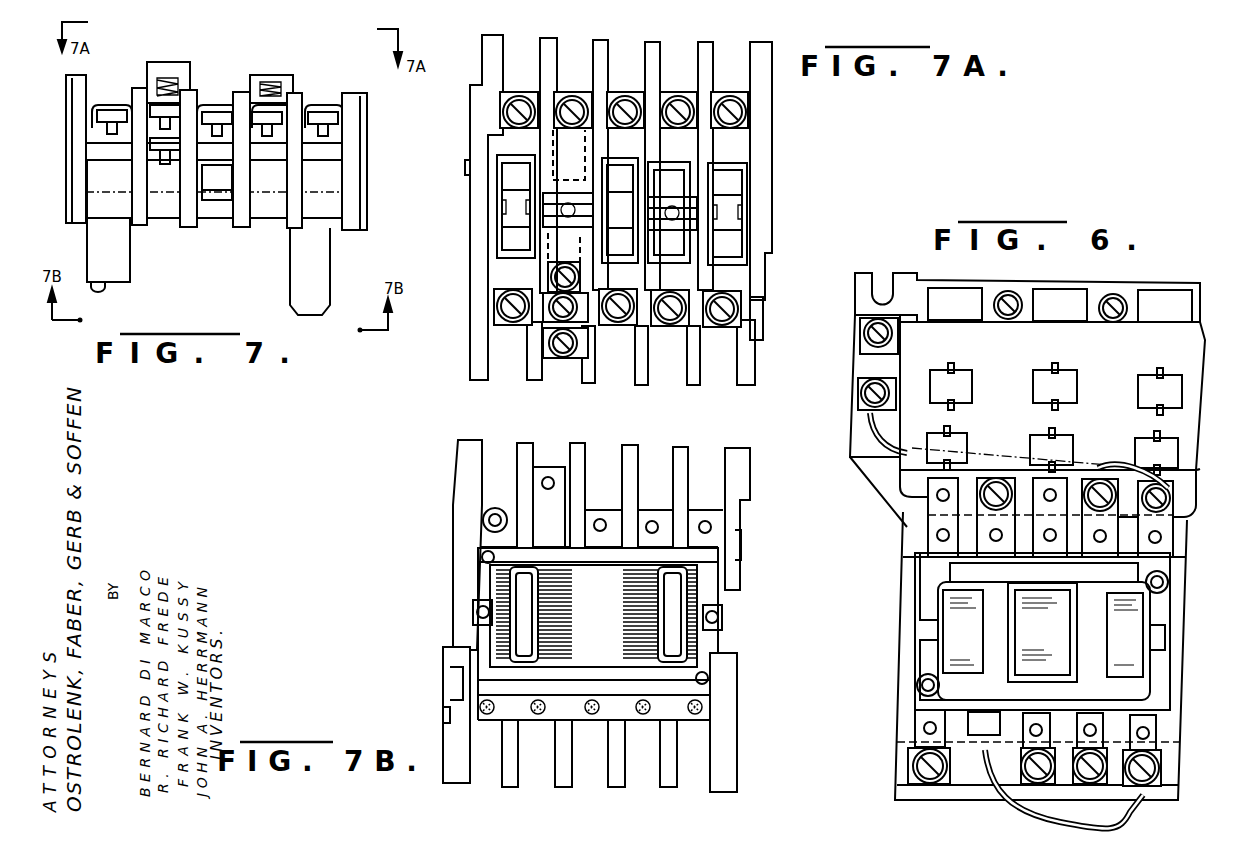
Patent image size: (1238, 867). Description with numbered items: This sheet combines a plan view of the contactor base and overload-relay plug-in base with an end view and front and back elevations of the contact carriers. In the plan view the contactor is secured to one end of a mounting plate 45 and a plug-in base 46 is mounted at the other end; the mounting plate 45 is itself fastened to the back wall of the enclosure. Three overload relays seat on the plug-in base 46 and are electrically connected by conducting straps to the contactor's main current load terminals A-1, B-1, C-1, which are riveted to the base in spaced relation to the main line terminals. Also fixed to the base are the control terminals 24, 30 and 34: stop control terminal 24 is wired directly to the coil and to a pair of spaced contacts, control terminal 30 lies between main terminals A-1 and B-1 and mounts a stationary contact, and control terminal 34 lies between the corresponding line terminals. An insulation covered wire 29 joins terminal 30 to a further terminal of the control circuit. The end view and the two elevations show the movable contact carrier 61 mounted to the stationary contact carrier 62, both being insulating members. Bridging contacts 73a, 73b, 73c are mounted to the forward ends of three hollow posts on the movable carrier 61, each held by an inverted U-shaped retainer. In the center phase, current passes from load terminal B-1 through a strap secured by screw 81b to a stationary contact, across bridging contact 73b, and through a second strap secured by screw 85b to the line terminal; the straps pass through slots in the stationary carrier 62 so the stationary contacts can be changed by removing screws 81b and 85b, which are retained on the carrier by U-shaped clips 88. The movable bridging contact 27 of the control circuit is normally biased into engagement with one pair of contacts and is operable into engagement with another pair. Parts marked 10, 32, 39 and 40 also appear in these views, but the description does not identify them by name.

In FIG. 7B, the electromagnet core and coil assembly 10 is at (604, 643).
In FIG. 6, the stop control terminal 24 is at (983, 480).
In FIG. 7A, the movable bridging contact 27 is at (552, 236).
In FIG. 6, the insulation covered wire 29 is at (1110, 470).
In FIG. 7A, the control terminal 30 is at (690, 137).
In FIG. 6, the control terminal 30 is at (1095, 478).
In FIG. 7A, the contact block 32 is at (672, 182).
In FIG. 6, the control terminal 34 is at (1033, 728).
In FIG. 7A, the contact carrier upper member 39 is at (548, 200).
In FIG. 7A, the movable contact bridge 40 is at (695, 218).
In FIG. 6, the mounting plate 45 is at (856, 290).
In FIG. 6, the plug-in base 46 is at (1082, 352).
In FIG. 7, the movable contact carrier 61 is at (132, 246).
In FIG. 7B, the movable contact carrier 61 is at (745, 574).
In FIG. 7, the stationary contact carrier 62 is at (372, 138).
In FIG. 7A, the stationary contact carrier 62 is at (758, 366).
In FIG. 7B, the stationary contact carrier 62 is at (452, 485).
In FIG. 7A, the bridging contact 73a is at (742, 186).
In FIG. 7A, the bridging contact 73b is at (618, 180).
In FIG. 7A, the bridging contact 73c is at (505, 182).
In FIG. 7A, the screw 81b is at (626, 98).
In FIG. 7A, the screw 85b is at (626, 322).
In FIG. 7A, the U-shaped clips 88 is at (614, 98).
In FIG. 6, the main current load terminal A-1 is at (1178, 508).
In FIG. 6, the main current load terminal B-1 is at (1040, 490).
In FIG. 6, the main current load terminal C-1 is at (930, 486).